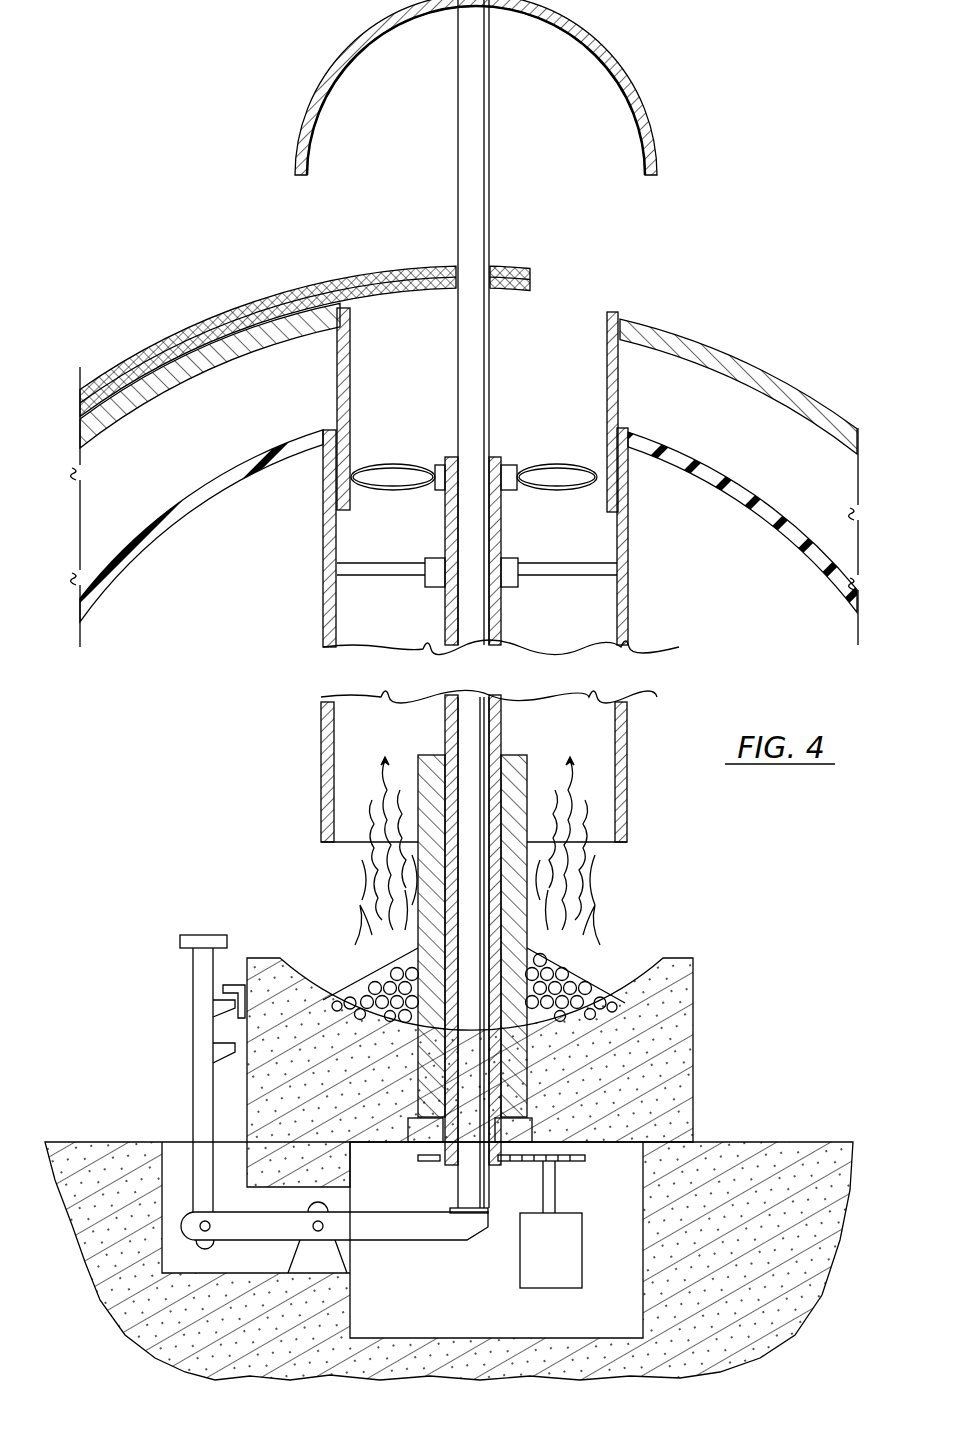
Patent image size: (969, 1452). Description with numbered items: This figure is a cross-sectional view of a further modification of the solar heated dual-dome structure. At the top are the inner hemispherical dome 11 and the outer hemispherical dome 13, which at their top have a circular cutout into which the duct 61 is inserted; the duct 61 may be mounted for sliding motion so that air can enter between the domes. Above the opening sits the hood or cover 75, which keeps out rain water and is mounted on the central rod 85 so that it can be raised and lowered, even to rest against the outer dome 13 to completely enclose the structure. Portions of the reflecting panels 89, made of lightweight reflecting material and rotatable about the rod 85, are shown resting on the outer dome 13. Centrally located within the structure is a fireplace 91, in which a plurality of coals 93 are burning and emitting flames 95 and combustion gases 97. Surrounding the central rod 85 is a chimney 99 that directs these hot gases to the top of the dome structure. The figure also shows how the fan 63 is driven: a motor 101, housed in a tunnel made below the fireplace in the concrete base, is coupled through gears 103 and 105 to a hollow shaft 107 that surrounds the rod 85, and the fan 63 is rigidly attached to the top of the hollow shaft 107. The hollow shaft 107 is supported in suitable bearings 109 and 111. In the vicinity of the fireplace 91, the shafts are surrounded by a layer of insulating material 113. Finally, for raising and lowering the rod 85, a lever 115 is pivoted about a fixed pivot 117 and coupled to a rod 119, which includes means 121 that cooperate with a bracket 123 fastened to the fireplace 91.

The inner hemispherical dome 11 is at (757, 495).
The outer hemispherical dome 13 is at (183, 392).
The duct 61 is at (618, 402).
The fan 63 is at (405, 462).
The cover 75 is at (645, 105).
The rod 85 is at (487, 367).
The reflecting panels 89 is at (222, 325).
The fireplace 91 is at (693, 1062).
The coals 93 is at (365, 978).
The flames 95 is at (375, 895).
The combustion gases 97 is at (558, 762).
The chimney 99 is at (320, 755).
The motor 101 is at (535, 1288).
The gear 103 is at (568, 1162).
The gear 105 is at (425, 1162).
The hollow shaft 107 is at (445, 620).
The bearing 109 is at (427, 560).
The bearing 111 is at (410, 1125).
The insulating layer 113 is at (530, 1063).
The lever 115 is at (395, 1240).
The fixed pivot 117 is at (298, 1252).
The rod 119 is at (190, 935).
The means 121 is at (213, 1030).
The bracket 123 is at (237, 985).